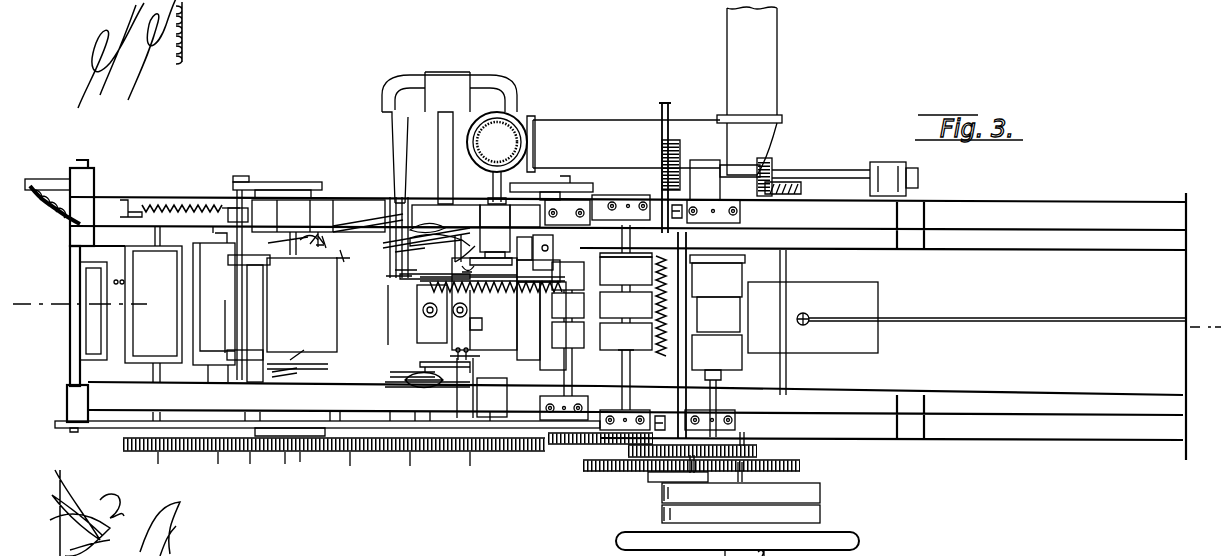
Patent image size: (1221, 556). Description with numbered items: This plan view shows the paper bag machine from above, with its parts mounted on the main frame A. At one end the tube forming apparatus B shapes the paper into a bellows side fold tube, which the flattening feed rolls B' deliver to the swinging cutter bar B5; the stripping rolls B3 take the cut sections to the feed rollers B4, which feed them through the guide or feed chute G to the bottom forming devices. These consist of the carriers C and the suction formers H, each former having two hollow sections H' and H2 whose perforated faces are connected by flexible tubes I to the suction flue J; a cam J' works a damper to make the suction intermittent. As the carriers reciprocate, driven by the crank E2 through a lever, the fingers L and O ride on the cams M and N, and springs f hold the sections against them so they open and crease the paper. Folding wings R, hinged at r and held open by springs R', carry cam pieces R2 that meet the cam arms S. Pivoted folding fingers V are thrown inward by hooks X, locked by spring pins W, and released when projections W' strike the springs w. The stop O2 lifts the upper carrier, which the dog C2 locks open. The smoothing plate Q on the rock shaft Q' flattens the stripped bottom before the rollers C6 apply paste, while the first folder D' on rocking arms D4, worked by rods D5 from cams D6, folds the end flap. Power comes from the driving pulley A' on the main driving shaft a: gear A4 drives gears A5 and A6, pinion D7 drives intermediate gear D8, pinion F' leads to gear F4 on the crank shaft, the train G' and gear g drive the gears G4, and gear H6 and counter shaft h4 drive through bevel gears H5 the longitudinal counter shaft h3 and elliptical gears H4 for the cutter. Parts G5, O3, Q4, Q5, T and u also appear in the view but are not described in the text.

The main frame A is at (388, 226).
The driving pulley A' is at (757, 503).
The gear A4 is at (692, 473).
The driving gear A5 is at (640, 478).
The driving gear A6 is at (740, 476).
The tube forming apparatus B is at (966, 314).
The flattening feed rolls B' is at (700, 335).
The stripping rolls B3 is at (608, 258).
The feed rollers B4 is at (622, 370).
The swinging cutter bar B5 is at (660, 110).
The carriers C is at (484, 304).
The dog C2 is at (321, 242).
The rollers C6 is at (214, 304).
The first folder D' is at (153, 304).
The rocking arms D4 is at (106, 338).
The rods D5 is at (263, 210).
The cams D6 is at (303, 466).
The pinion D7 is at (644, 424).
The intermediate gear D8 is at (592, 428).
The crank E2 is at (657, 429).
The pinion F' is at (719, 449).
The gear F4 is at (552, 452).
The springs f is at (549, 302).
The guide or feed chute G is at (538, 298).
The intermediate gears G' is at (409, 469).
The gears G4 is at (182, 468).
The guide bracket G5 is at (273, 468).
The intermediate gear g is at (243, 468).
The suction formers H is at (421, 314).
The former section H' is at (440, 317).
The former section H2 is at (495, 335).
The elliptical gears H4 is at (694, 150).
The bevel gears H5 is at (772, 162).
The gear H6 is at (802, 467).
The longitudinal counter shaft h3 is at (836, 166).
The counter shaft h4 is at (788, 402).
The flexible tubes I is at (480, 304).
The suction flue J is at (652, 91).
The cam J' is at (551, 186).
The finger L is at (402, 307).
The cam M is at (415, 278).
The cam N is at (410, 358).
The finger O is at (422, 356).
The stop or second trip O2 is at (348, 254).
The pin O3 is at (325, 227).
The smoothing plate Q is at (302, 313).
The rock shaft Q' is at (254, 318).
The bar Q4 is at (288, 188).
The bar Q5 is at (250, 182).
The folding wings R is at (402, 319).
The springs R' is at (463, 387).
The cam pieces R2 is at (435, 226).
The hinge r is at (426, 231).
The cam arms S is at (401, 307).
The pipe T is at (438, 139).
The folding fingers V is at (445, 292).
The spring pins W is at (288, 232).
The projections W' is at (309, 364).
The springs w is at (445, 300).
The pin u is at (453, 269).
The hooks X is at (617, 311).
The main driving shaft a is at (744, 438).